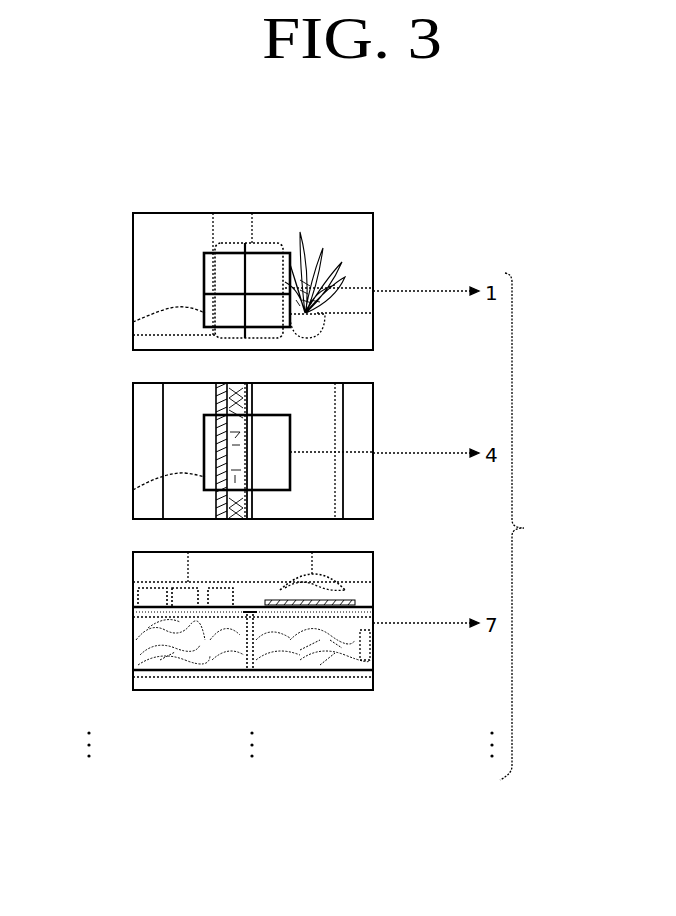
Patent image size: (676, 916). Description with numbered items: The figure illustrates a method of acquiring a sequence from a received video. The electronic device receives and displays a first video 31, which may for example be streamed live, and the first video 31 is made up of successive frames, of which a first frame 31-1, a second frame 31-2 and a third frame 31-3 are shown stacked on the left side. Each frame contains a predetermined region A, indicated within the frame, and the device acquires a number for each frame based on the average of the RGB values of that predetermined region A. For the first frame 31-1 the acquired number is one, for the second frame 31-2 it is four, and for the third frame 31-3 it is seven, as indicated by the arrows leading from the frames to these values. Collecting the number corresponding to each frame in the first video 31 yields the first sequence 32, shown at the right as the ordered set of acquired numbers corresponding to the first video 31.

The first video 31 is at (57, 274).
The first frame 31-1 is at (133, 291).
The second frame 31-2 is at (133, 456).
The third frame 31-3 is at (133, 628).
The first sequence 32 is at (595, 511).
The predetermined region A is at (160, 318).